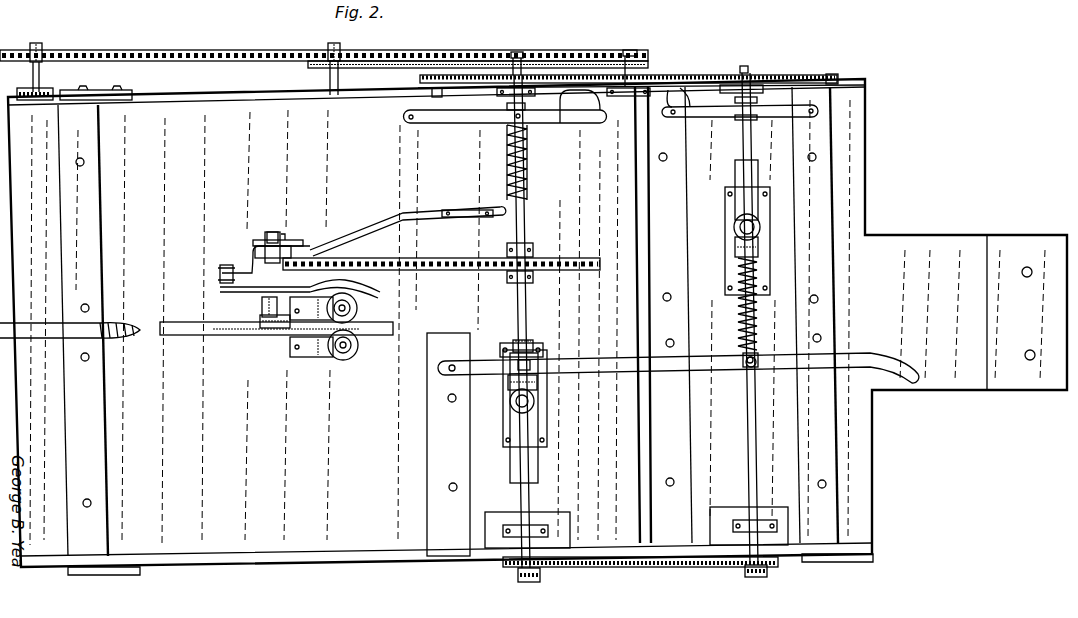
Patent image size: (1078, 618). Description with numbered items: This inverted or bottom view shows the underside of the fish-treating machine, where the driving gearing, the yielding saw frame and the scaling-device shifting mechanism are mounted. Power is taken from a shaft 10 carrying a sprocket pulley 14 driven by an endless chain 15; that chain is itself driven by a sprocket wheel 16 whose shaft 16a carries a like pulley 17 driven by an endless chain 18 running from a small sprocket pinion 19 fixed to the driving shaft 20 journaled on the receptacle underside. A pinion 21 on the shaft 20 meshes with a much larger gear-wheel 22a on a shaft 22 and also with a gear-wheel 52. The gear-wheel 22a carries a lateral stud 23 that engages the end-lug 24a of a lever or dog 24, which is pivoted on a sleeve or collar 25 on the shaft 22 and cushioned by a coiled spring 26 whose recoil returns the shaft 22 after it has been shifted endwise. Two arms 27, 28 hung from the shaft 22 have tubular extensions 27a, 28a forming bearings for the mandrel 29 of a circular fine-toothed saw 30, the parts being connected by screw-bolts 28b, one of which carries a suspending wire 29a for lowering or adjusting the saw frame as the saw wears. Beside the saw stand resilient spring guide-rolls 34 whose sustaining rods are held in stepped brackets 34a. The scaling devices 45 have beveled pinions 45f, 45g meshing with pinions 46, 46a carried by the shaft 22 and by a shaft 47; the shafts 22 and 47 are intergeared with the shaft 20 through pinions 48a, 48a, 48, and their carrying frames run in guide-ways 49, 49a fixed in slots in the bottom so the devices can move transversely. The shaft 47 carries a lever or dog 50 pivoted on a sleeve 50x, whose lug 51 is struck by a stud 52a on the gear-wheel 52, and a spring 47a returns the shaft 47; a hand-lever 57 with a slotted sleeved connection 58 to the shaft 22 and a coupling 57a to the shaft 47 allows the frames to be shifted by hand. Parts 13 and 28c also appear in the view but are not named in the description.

The shaft 10 is at (38, 72).
The shaft 13 is at (45, 55).
The sprocket pulley 14 is at (33, 47).
The endless chain 15 is at (324, 44).
The sprocket wheel 16 is at (398, 41).
The shaft 16a is at (333, 43).
The sprocket pulley 17 is at (308, 66).
The endless chain 18 is at (462, 62).
The sprocket pinion 19 is at (629, 50).
The driving shaft 20 is at (632, 80).
The pinion 21 is at (622, 75).
The shaft 22 is at (527, 228).
The gear-wheel 22a is at (497, 77).
The lateral stud 23 is at (432, 97).
The lever or dog 24 is at (460, 122).
The lateral end-lug 24a is at (582, 100).
The sleeve or collar 25 is at (508, 108).
The coiled spring 26 is at (528, 178).
The arm 27 is at (400, 224).
The tubular extension 27a is at (270, 236).
The arm 28 is at (262, 300).
The tubular extension 28a is at (275, 335).
The screw-bolts 28b is at (226, 268).
The pin 28c is at (232, 270).
The saw mandrel 29 is at (222, 289).
The suspending wire 29a is at (142, 338).
The circular saw 30 is at (262, 333).
The guide-rolls 34 is at (358, 309).
The brackets 34a is at (322, 350).
The scaling devices 45 is at (735, 231).
The beveled pinion 45f is at (780, 225).
The beveled pinion 45g is at (515, 408).
The pinion 46 is at (736, 252).
The pinion 46a is at (540, 388).
The shaft 47 is at (752, 468).
The spring 47a is at (742, 350).
The gear wheel 48 is at (630, 570).
The pinions 48a is at (535, 582).
The guide-way 49 is at (726, 194).
The guide-way 49a is at (545, 430).
The lever or dog 50 is at (746, 77).
The sleeve or collar 50x is at (758, 74).
The lateral lug 51 is at (695, 80).
The gear-wheel 52 is at (628, 65).
The stud 52a is at (838, 78).
The hand-lever 57 is at (612, 366).
The coupling 57a is at (747, 372).
The slotted and sleeved connection 58 is at (535, 348).